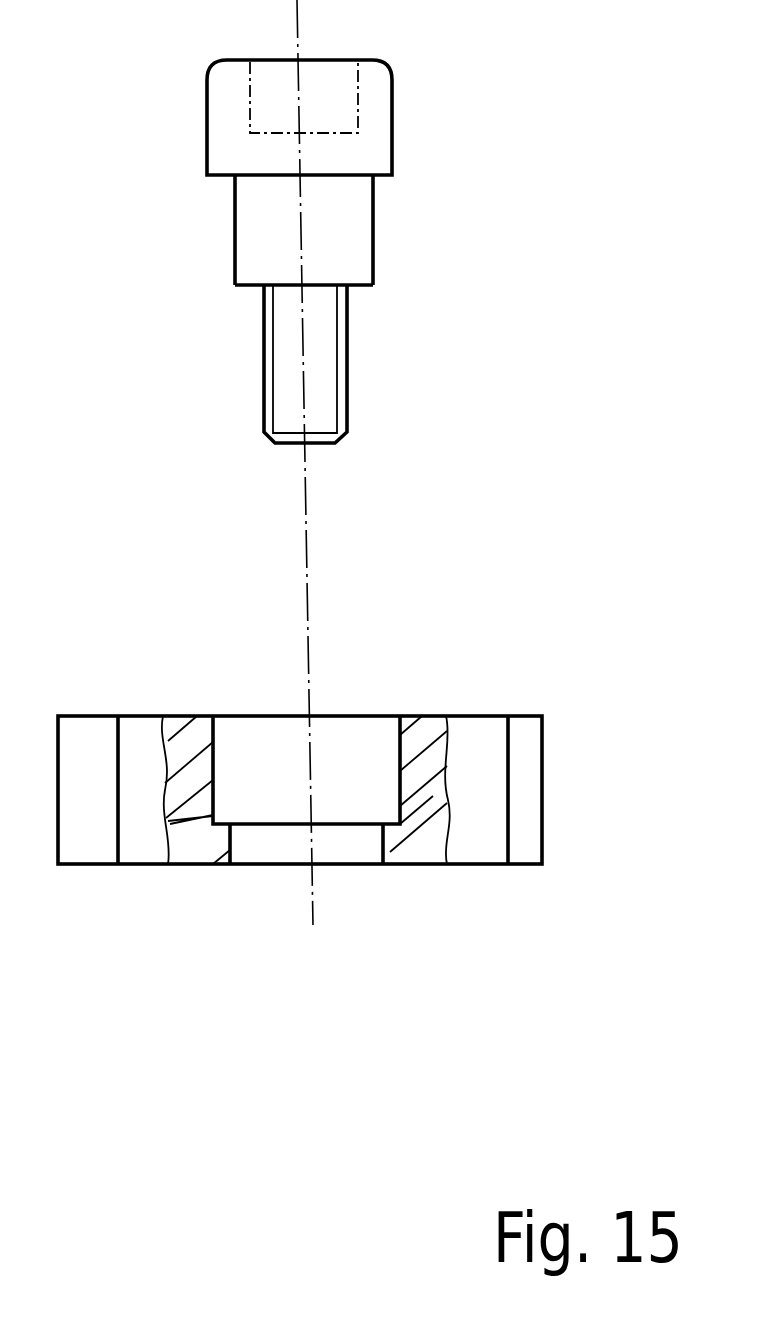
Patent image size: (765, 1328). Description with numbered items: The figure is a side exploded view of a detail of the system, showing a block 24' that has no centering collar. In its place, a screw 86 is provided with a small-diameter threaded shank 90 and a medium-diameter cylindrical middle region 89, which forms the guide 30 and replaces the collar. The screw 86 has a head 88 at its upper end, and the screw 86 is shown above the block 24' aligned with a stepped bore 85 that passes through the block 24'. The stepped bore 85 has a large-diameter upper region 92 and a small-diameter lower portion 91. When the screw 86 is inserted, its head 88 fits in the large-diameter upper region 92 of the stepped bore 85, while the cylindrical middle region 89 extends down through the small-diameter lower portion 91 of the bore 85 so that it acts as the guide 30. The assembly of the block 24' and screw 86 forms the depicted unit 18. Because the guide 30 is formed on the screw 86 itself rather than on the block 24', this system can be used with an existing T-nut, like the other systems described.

The screw 86 is at (307, 251).
The head 88 is at (368, 147).
The middle region 89 is at (260, 206).
The guide 30 is at (252, 255).
The threaded shank 90 is at (292, 353).
The plate member 18 is at (332, 752).
The upper region 92 is at (253, 750).
The stepped bore 85 is at (360, 750).
The block 24' is at (328, 751).
The lower portion 91 is at (260, 842).